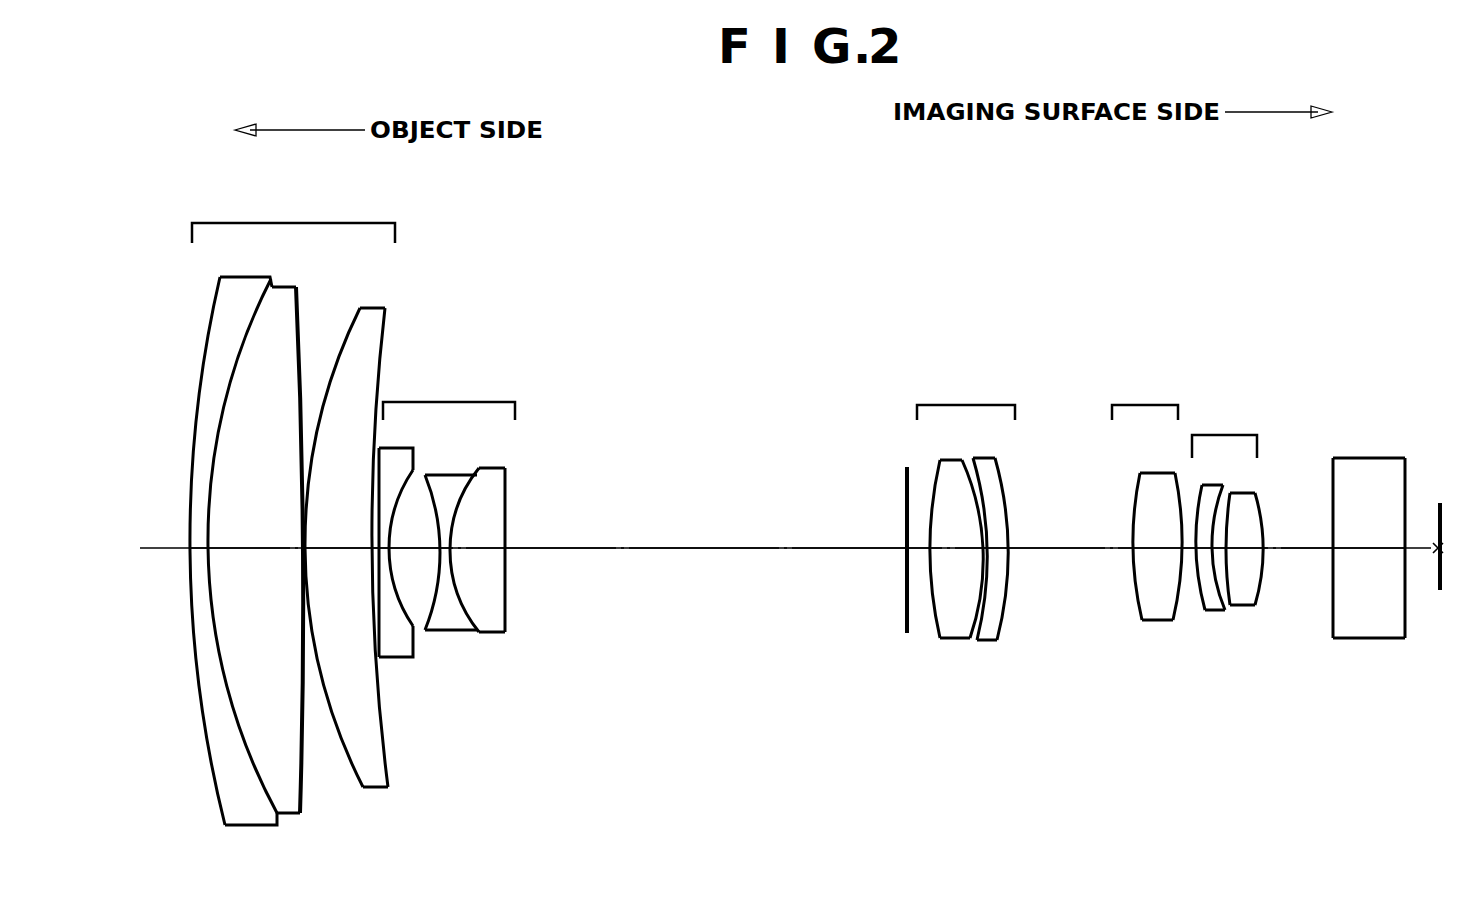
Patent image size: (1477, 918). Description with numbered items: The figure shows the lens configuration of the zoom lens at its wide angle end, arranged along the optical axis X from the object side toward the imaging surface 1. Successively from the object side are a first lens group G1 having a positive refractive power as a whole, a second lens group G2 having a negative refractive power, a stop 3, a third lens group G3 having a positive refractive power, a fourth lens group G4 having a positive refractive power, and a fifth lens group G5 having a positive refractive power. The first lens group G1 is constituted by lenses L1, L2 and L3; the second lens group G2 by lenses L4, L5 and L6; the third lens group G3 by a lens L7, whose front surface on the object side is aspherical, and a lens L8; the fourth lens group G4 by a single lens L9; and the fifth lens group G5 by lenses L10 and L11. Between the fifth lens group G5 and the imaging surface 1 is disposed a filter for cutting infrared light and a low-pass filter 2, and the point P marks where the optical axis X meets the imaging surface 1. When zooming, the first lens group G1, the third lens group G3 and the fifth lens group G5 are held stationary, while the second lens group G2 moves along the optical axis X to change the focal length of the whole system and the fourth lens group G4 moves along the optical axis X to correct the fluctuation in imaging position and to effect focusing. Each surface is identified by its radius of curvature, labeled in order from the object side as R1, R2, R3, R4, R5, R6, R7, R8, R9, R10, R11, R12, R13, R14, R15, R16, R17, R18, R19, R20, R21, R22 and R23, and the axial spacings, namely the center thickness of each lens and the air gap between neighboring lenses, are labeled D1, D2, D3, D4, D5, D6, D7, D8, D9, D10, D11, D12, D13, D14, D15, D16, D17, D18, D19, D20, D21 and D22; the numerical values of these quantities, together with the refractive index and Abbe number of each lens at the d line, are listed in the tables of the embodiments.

The first lens group G1 is at (292, 504).
The second lens group G2 is at (459, 533).
The third lens group G3 is at (988, 535).
The fourth lens group G4 is at (1149, 525).
The fifth lens group G5 is at (1258, 548).
The lens L1 is at (216, 530).
The lens L2 is at (290, 534).
The lens L3 is at (368, 529).
The lens L4 is at (391, 555).
The lens L5 is at (482, 550).
The lens L6 is at (533, 537).
The lens L7 is at (943, 556).
The lens L8 is at (1026, 545).
The lens L9 is at (1149, 555).
The lens L10 is at (1231, 568).
The lens L11 is at (1275, 567).
The lens surface radius of curvature R1 is at (198, 397).
The lens surface radius of curvature R2 is at (235, 390).
The lens surface radius of curvature R3 is at (300, 420).
The lens surface radius of curvature R4 is at (343, 360).
The lens surface radius of curvature R5 is at (385, 355).
The lens surface radius of curvature R6 is at (378, 632).
The lens surface radius of curvature R7 is at (405, 607).
The lens surface radius of curvature R8 is at (432, 600).
The lens surface radius of curvature R9 is at (485, 630).
The lens surface radius of curvature R10 is at (508, 610).
The surface radius of curvature R11 is at (907, 583).
The lens surface radius of curvature R12 is at (938, 617).
The lens surface radius of curvature R13 is at (980, 633).
The lens surface radius of curvature R14 is at (975, 635).
The lens surface radius of curvature R15 is at (1007, 600).
The lens surface radius of curvature R16 is at (1140, 605).
The lens surface radius of curvature R17 is at (1180, 607).
The lens surface radius of curvature R18 is at (1196, 603).
The lens surface radius of curvature R19 is at (1225, 580).
The lens surface radius of curvature R20 is at (1237, 583).
The lens surface radius of curvature R21 is at (1260, 587).
The surface radius of curvature R22 is at (1332, 630).
The surface radius of curvature R23 is at (1407, 622).
The axial spacing D1 is at (193, 540).
The axial spacing D2 is at (255, 539).
The axial spacing D3 is at (305, 546).
The axial spacing D4 is at (339, 539).
The axial spacing D5 is at (372, 546).
The axial spacing D6 is at (375, 556).
The axial spacing D7 is at (414, 539).
The axial spacing D8 is at (455, 546).
The axial spacing D9 is at (477, 539).
The axial spacing D10 is at (706, 535).
The axial spacing D11 is at (905, 535).
The axial spacing D12 is at (958, 535).
The axial spacing D13 is at (988, 525).
The axial spacing D14 is at (1003, 537).
The axial spacing D15 is at (1070, 535).
The axial spacing D16 is at (1160, 537).
The axial spacing D17 is at (1185, 550).
The axial spacing D18 is at (1228, 530).
The axial spacing D19 is at (1222, 540).
The axial spacing D20 is at (1242, 550).
The axial spacing D21 is at (1298, 535).
The axial spacing D22 is at (1369, 535).
The imaging surface 1 is at (1437, 523).
The low-pass filter 2 is at (1388, 555).
The stop 3 is at (874, 566).
The image point P is at (1450, 549).
The optical axis X is at (772, 555).